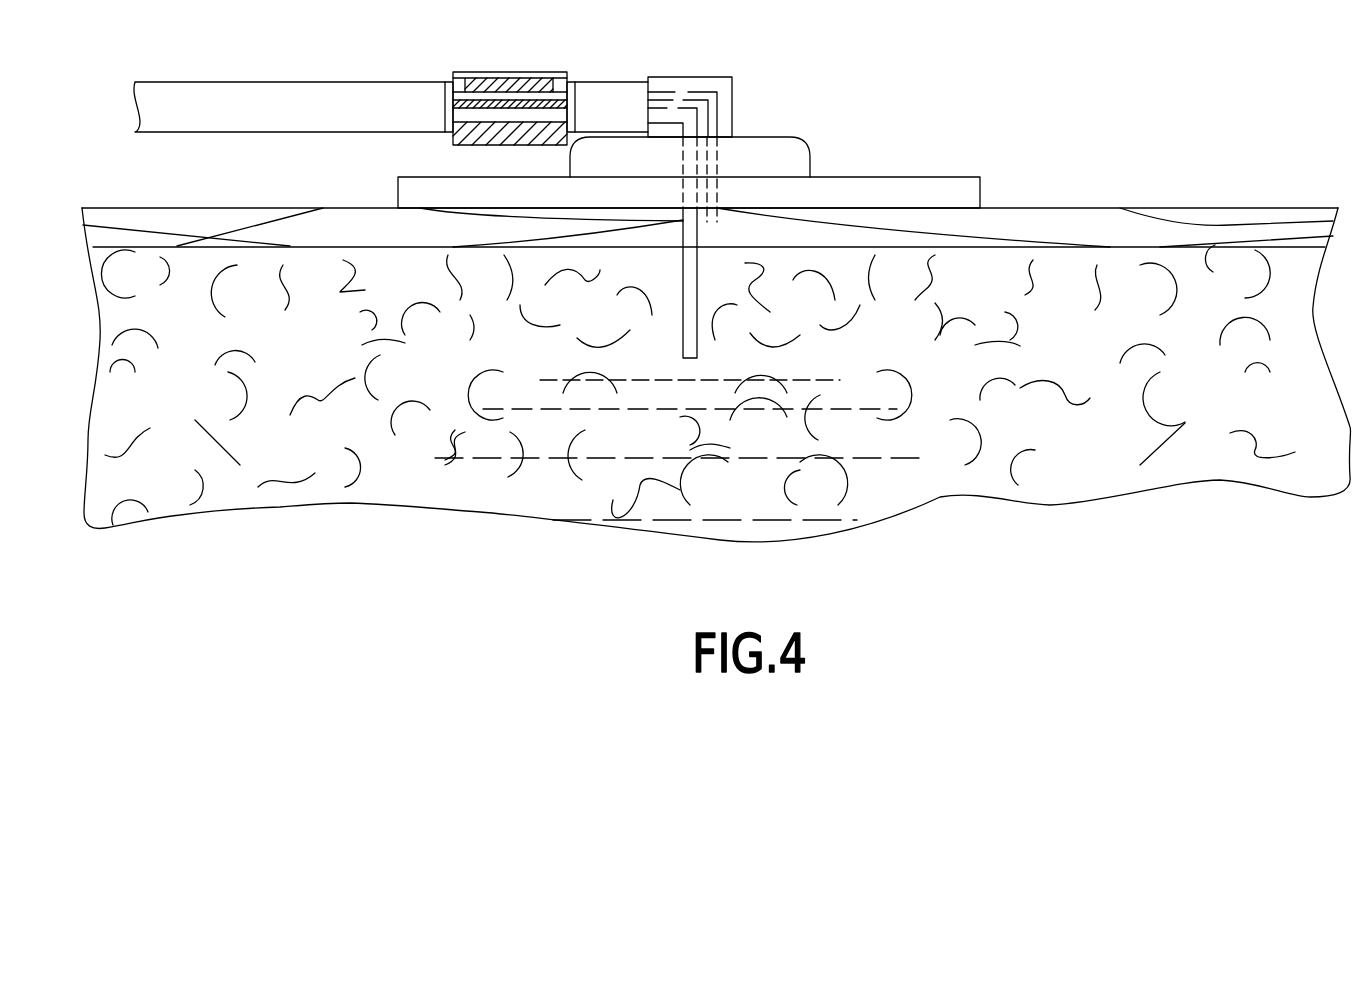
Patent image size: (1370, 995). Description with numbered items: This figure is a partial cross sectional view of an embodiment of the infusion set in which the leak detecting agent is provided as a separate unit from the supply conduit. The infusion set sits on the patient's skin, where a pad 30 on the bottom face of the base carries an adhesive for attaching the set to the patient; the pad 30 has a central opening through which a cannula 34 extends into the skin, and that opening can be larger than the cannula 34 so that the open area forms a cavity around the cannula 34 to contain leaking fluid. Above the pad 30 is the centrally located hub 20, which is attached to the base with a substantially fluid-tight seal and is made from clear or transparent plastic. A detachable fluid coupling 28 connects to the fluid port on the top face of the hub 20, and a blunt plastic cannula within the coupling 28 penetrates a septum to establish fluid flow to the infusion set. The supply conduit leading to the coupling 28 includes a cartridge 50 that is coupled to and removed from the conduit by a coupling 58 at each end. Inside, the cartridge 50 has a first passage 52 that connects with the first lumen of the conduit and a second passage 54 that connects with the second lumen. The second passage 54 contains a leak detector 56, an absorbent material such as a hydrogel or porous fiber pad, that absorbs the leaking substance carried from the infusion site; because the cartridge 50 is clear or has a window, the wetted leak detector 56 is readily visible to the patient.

The hub 20 is at (806, 142).
The fluid coupling 28 is at (692, 77).
The pad 30 is at (979, 176).
The cannula 34 is at (697, 335).
The cartridge 50 is at (469, 100).
The first passage 52 is at (477, 115).
The second passage 54 is at (462, 97).
The leak detector 56 is at (522, 84).
The coupling 58 is at (445, 84).